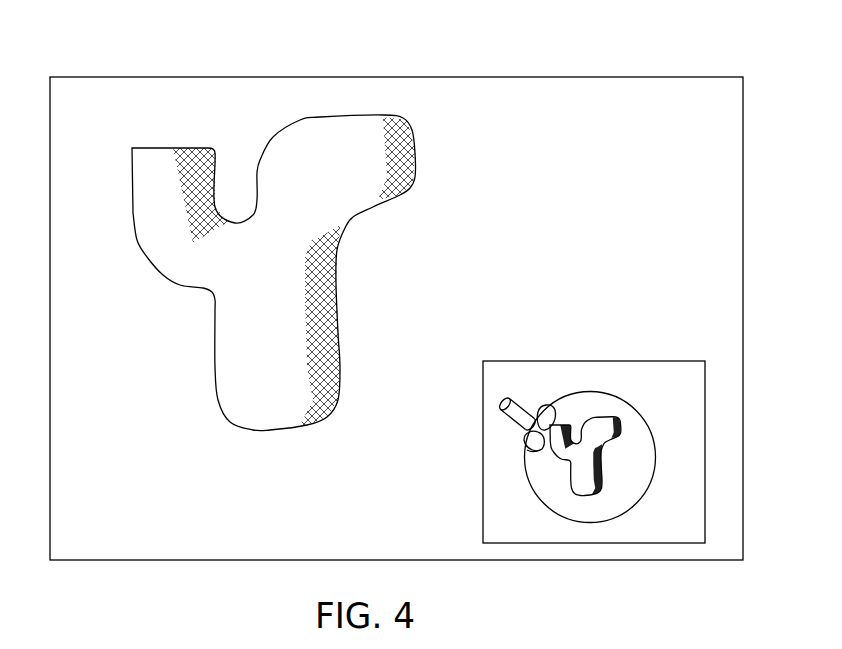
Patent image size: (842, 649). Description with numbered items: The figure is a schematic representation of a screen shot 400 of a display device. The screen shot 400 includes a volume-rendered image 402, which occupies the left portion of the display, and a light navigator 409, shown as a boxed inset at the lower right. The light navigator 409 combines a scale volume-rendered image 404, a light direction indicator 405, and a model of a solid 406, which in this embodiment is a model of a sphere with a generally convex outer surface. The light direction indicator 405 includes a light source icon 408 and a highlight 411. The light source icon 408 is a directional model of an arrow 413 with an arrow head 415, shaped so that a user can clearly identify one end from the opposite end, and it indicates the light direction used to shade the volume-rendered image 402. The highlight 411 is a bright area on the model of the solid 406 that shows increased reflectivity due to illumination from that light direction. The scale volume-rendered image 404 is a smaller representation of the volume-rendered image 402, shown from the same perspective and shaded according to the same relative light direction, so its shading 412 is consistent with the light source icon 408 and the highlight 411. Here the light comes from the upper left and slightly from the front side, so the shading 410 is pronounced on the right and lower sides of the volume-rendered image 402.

The screen shot 400 is at (627, 64).
The volume-rendered image 402 is at (140, 218).
The scale volume-rendered image 404 is at (603, 417).
The light direction indicator 405 is at (517, 432).
The model of a solid 406 is at (620, 493).
The light source icon 408 is at (500, 415).
The light navigator 409 is at (657, 361).
The shading 410 is at (188, 148).
The highlight 411 is at (527, 452).
The shading 412 is at (627, 427).
The arrow 413 is at (502, 402).
The arrow head 415 is at (542, 405).